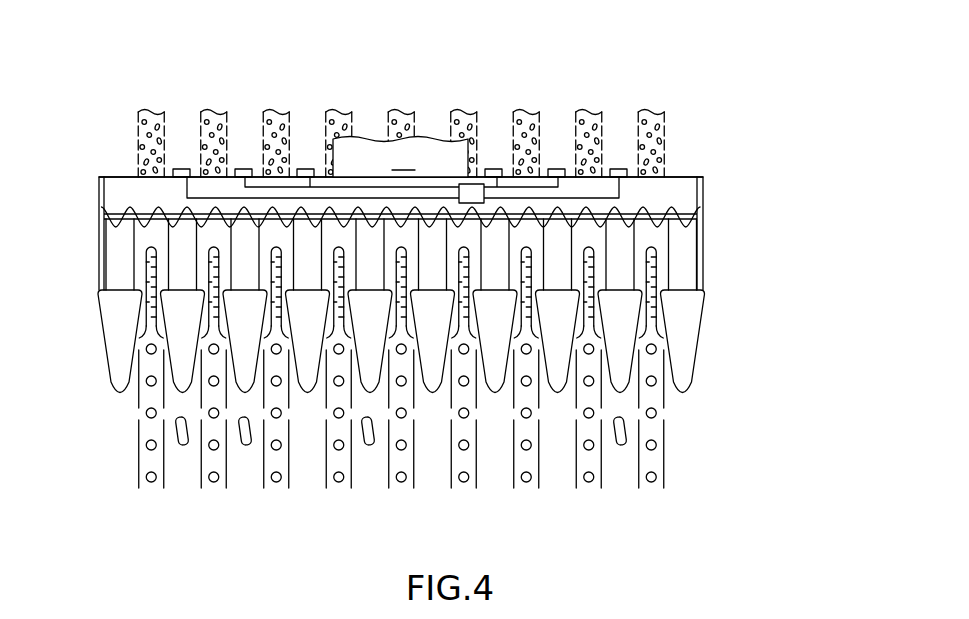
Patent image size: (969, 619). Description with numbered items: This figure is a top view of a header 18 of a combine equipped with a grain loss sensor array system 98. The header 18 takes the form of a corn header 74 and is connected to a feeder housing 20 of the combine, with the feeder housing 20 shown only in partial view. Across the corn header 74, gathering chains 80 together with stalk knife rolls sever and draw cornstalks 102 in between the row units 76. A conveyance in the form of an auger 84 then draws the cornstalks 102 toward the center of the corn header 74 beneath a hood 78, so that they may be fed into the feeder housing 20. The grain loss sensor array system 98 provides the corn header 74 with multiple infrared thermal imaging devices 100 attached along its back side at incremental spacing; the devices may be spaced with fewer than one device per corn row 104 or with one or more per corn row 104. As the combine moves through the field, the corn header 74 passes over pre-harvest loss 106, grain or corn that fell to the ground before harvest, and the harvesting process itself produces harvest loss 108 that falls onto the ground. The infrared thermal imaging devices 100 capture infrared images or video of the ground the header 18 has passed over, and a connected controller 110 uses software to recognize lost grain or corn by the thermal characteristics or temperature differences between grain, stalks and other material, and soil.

The header 18 is at (712, 207).
The feeder housing 20 is at (400, 157).
The corn header 74 is at (705, 248).
The row units 76 is at (369, 398).
The hood 78 is at (684, 192).
The gathering chains 80 is at (147, 279).
The auger 84 is at (172, 219).
The grain loss sensor array system 98 is at (447, 296).
The infrared thermal imaging device 100 is at (177, 175).
The cornstalks 102 is at (213, 483).
The corn row 104 is at (137, 460).
The pre-harvest loss 106 is at (182, 446).
The harvest loss 108 is at (148, 160).
The controller 110 is at (483, 184).